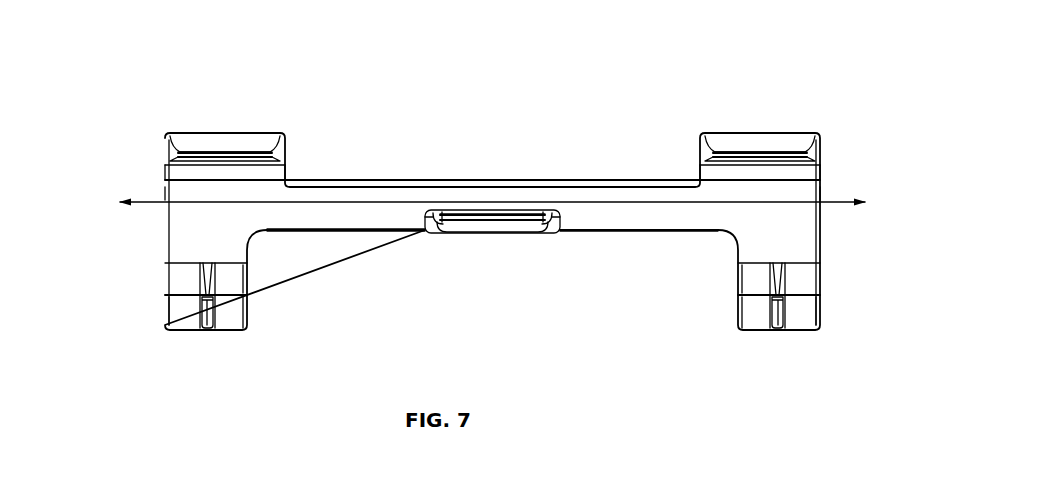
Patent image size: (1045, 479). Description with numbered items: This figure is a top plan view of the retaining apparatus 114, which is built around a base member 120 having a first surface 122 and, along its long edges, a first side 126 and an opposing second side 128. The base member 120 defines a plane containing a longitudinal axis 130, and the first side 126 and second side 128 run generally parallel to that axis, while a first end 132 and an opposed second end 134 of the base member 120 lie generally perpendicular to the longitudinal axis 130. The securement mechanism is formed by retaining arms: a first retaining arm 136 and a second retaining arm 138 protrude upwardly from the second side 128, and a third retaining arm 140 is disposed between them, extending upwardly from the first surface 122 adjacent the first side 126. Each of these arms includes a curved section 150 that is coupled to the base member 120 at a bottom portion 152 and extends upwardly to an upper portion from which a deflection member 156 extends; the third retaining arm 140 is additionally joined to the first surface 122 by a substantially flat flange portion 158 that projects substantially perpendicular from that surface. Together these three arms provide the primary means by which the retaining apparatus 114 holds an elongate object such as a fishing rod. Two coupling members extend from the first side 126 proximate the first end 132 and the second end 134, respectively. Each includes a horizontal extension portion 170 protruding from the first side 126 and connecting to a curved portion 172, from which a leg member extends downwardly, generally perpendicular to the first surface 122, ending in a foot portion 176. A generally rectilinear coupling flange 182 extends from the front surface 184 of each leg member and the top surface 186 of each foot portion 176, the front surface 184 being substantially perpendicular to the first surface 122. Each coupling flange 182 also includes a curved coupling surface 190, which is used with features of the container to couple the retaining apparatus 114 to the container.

The retaining apparatus 114 is at (130, 33).
The base member 120 is at (623, 220).
The first surface 122 is at (407, 220).
The first side 126 is at (353, 233).
The second side 128 is at (529, 179).
The longitudinal axis 130 is at (840, 204).
The first end 132 is at (822, 193).
The second end 134 is at (163, 193).
The first retaining arm 136 is at (798, 140).
The second retaining arm 138 is at (262, 140).
The third retaining arm 140 is at (527, 229).
The curved section 150 is at (198, 140).
The bottom portion 152 is at (277, 173).
The deflection member 156 is at (242, 153).
The flange portion 158 is at (555, 222).
The horizontal extension portion 170 is at (175, 247).
The curved portion 172 is at (233, 278).
The foot portion 176 is at (237, 317).
The coupling flange 182 is at (208, 312).
The front surface 184 is at (179, 300).
The top surface 186 is at (172, 322).
The curved coupling surface 190 is at (208, 331).